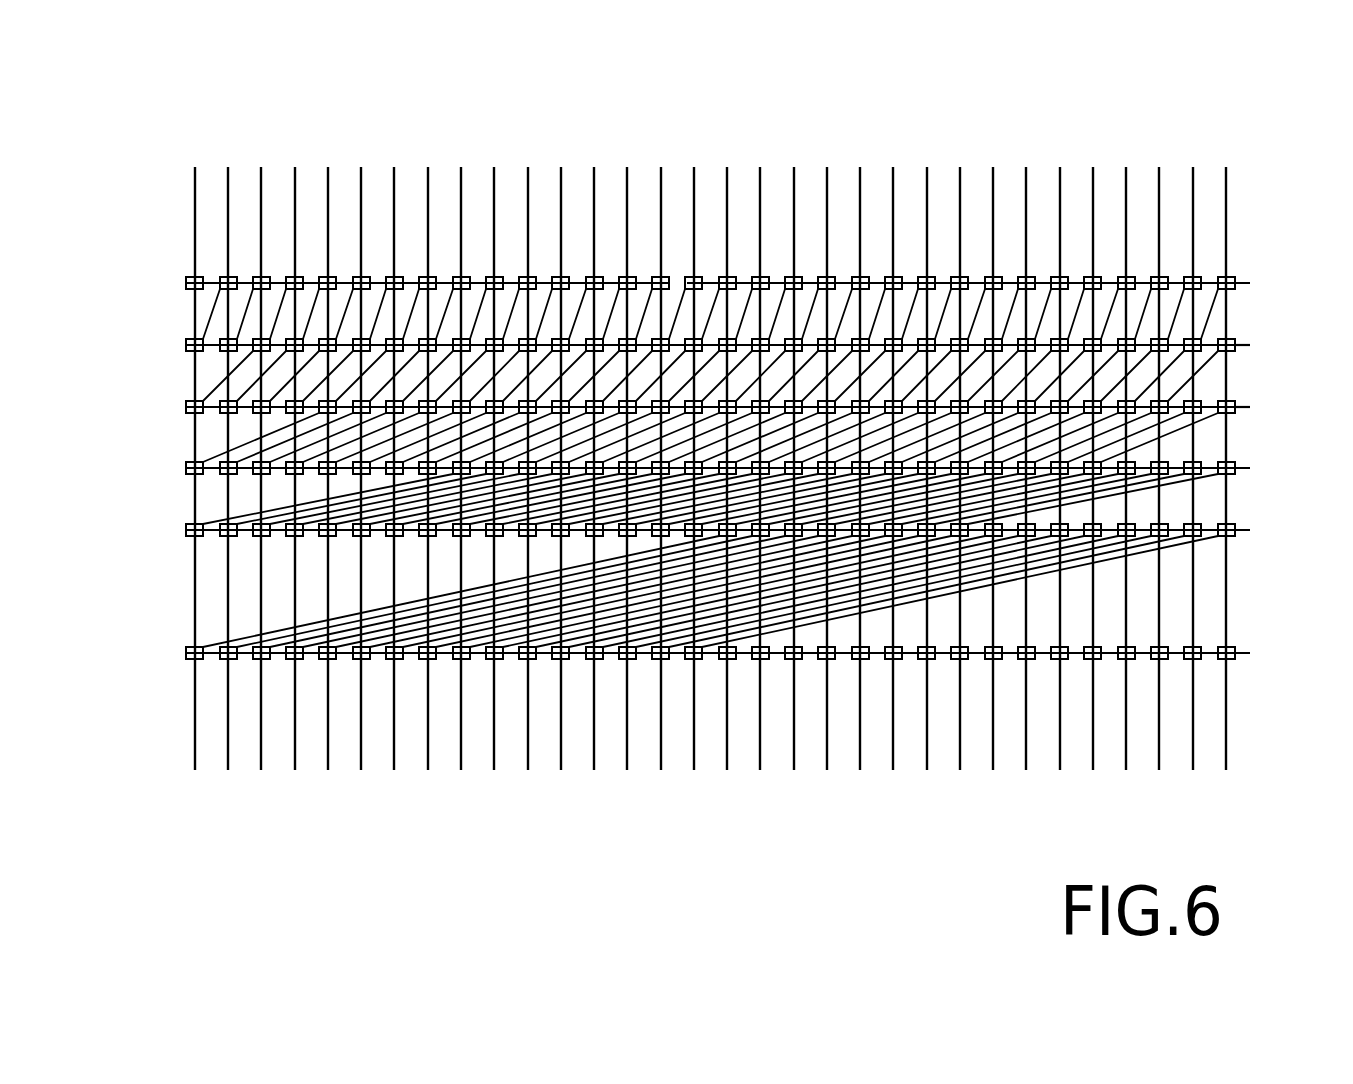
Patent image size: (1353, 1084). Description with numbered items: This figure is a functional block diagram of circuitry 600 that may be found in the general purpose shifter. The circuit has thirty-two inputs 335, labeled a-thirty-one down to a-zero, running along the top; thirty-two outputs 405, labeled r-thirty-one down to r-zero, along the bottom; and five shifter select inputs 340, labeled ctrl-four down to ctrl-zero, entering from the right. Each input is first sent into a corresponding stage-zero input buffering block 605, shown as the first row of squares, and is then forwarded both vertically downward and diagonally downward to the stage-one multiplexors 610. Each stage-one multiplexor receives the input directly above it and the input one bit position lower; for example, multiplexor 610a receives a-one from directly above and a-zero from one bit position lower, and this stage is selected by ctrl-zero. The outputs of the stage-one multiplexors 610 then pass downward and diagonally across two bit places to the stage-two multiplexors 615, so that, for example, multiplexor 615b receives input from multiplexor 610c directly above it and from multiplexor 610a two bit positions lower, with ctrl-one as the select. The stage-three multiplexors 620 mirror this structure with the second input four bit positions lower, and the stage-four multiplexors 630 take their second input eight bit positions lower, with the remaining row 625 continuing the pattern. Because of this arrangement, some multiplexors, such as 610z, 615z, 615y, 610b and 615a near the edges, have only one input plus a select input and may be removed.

The circuitry 600 is at (430, 868).
The inputs 335 is at (160, 134).
The outputs 405 is at (1270, 790).
The shifter select inputs 340 is at (1257, 692).
The stage 0 input buffering blocks 605 is at (168, 283).
The stage 1 multiplexors 610 is at (168, 345).
The stage 2 multiplexors 615 is at (168, 407).
The stage 3 multiplexors 620 is at (168, 468).
The shift-by-8 stage 625 is at (168, 530).
The stage 4 multiplexors 630 is at (168, 653).
The multiplexor 610a is at (1204, 338).
The multiplexer cell of stage 610 610b is at (1200, 339).
The multiplexor 610c is at (1167, 339).
The multiplexor 610z is at (1238, 345).
The multiplexer cell of stage 615 615a is at (1135, 411).
The multiplexor 615b is at (1150, 413).
The multiplexor 615y is at (1201, 401).
The multiplexor 615z is at (1238, 407).